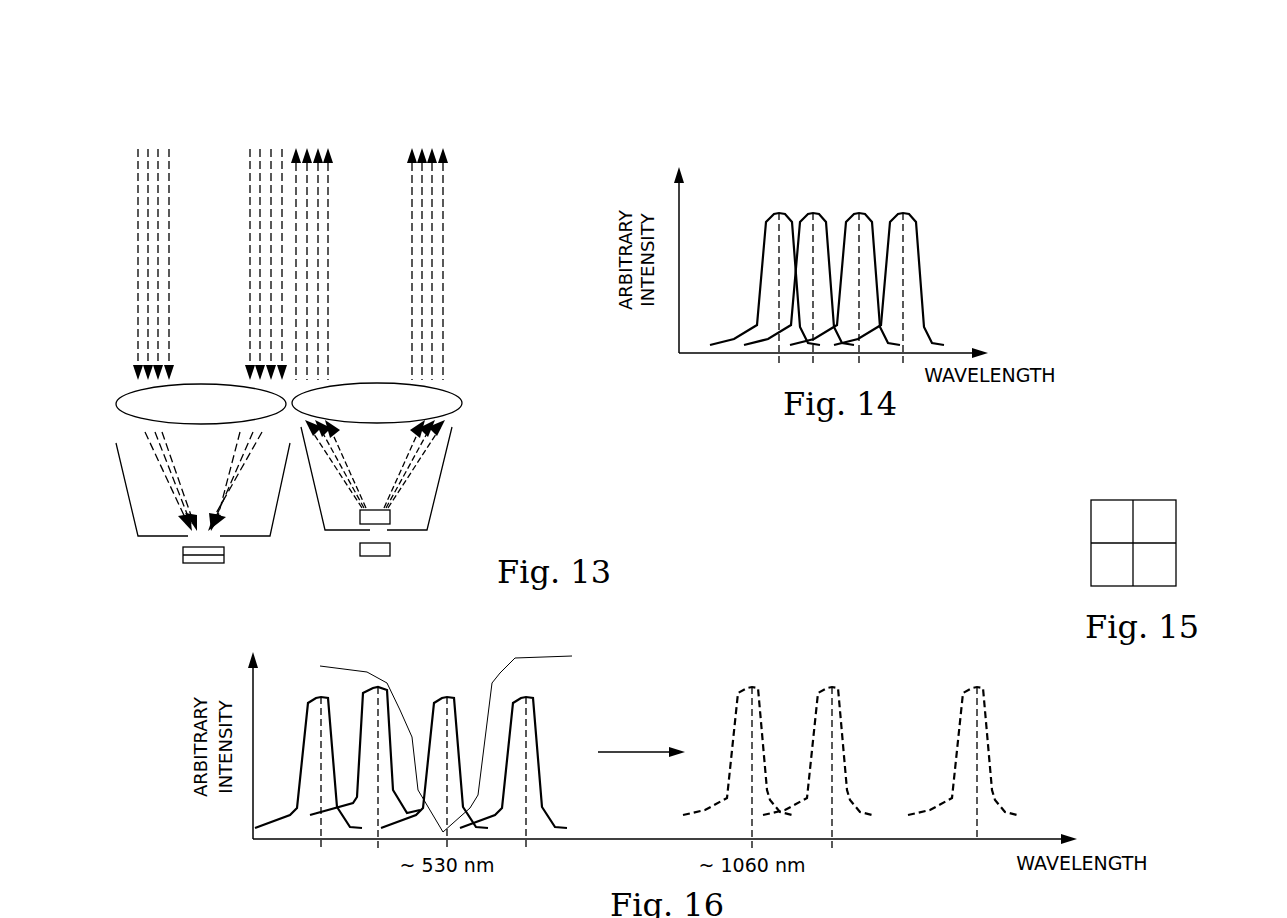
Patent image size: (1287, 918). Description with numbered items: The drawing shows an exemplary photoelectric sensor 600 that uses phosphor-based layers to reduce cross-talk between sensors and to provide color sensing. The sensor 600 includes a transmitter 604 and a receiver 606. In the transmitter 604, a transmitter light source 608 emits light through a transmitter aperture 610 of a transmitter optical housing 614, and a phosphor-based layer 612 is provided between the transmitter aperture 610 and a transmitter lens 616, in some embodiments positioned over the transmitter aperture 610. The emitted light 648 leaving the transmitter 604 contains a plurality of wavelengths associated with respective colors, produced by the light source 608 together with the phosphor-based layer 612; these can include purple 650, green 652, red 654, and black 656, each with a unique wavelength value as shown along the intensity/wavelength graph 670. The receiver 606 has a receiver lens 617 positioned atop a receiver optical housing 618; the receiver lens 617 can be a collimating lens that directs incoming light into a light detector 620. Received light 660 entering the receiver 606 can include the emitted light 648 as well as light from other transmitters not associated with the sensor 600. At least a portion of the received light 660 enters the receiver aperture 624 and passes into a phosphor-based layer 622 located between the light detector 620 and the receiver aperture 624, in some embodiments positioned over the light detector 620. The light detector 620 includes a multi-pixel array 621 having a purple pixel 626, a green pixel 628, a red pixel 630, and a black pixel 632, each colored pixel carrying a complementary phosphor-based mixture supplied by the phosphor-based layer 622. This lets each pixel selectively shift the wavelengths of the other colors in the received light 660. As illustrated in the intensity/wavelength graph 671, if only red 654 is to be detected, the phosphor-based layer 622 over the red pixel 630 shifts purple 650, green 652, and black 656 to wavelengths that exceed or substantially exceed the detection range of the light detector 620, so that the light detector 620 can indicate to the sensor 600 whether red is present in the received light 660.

In FIG. 13, the sensor 600 is at (132, 590).
In FIG. 13, the transmitter 604 is at (407, 475).
In FIG. 13, the receiver 606 is at (173, 488).
In FIG. 13, the transmitter light source 608 is at (374, 558).
In FIG. 13, the transmitter aperture 610 is at (402, 541).
In FIG. 13, the phosphor-based layer 612 is at (358, 517).
In FIG. 13, the transmitter optical housing 614 is at (447, 440).
In FIG. 13, the transmitter lens 616 is at (462, 404).
In FIG. 13, the receiver lens 617 is at (116, 405).
In FIG. 13, the receiver optical housing 618 is at (133, 524).
In FIG. 13, the light detector 620 is at (182, 574).
In FIG. 15, the multi-pixel array 621 is at (1133, 511).
In FIG. 13, the phosphor-based layer 622 is at (183, 549).
In FIG. 13, the receiver aperture 624 is at (236, 548).
In FIG. 15, the purple pixel 626 is at (1176, 520).
In FIG. 15, the green pixel 628 is at (1176, 562).
In FIG. 15, the red pixel 630 is at (1092, 565).
In FIG. 15, the black pixel 632 is at (1092, 520).
In FIG. 13, the emitted light 648 is at (466, 137).
In FIG. 13, the purple 650 is at (136, 211).
In FIG. 14, the purple 650 is at (763, 232).
In FIG. 16, the purple 650 is at (305, 717).
In FIG. 13, the green 652 is at (147, 259).
In FIG. 14, the green 652 is at (805, 213).
In FIG. 16, the green 652 is at (362, 697).
In FIG. 13, the red 654 is at (157, 306).
In FIG. 14, the red 654 is at (865, 213).
In FIG. 16, the red 654 is at (443, 697).
In FIG. 13, the black 656 is at (168, 357).
In FIG. 14, the black 656 is at (917, 233).
In FIG. 16, the black 656 is at (538, 714).
In FIG. 13, the received light 660 is at (98, 226).
In FIG. 14, the intensity/wavelength graph 670 is at (999, 261).
In FIG. 16, the intensity/wavelength graph 671 is at (340, 870).